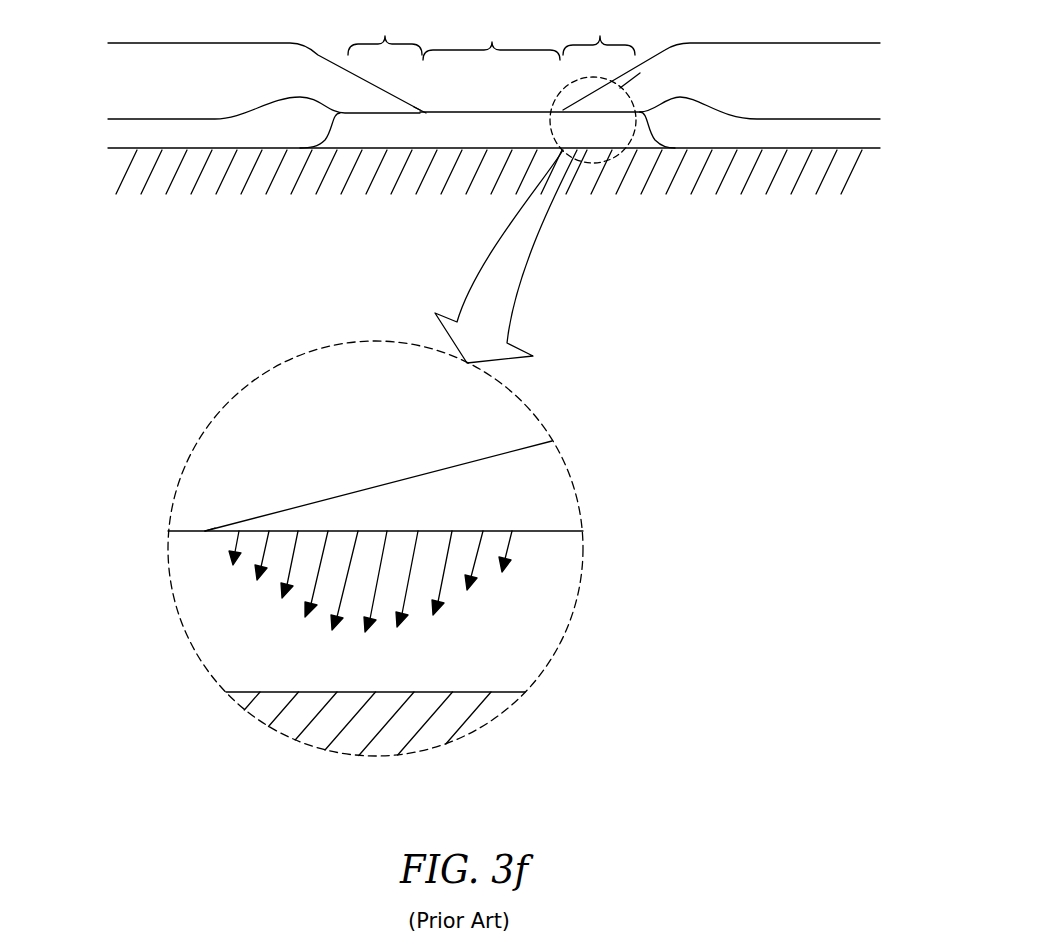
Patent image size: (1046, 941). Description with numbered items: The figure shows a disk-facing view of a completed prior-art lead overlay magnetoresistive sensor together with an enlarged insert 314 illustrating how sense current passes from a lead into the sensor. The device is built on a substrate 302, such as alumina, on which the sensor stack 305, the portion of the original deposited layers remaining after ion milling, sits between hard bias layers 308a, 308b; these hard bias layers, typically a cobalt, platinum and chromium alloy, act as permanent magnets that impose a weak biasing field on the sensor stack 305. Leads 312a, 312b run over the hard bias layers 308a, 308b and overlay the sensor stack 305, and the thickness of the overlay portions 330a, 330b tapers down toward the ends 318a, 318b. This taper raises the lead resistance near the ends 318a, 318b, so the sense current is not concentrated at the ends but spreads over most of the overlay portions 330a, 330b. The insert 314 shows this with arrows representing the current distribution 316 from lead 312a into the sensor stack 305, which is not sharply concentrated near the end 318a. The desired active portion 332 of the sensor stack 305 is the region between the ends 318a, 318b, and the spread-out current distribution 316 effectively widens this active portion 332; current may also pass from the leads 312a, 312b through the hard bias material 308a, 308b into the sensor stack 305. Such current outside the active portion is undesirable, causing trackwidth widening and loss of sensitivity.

The substrate 302 is at (870, 167).
The sensor stack 305 is at (418, 150).
The hard bias layer 308a is at (870, 133).
The hard bias layer 308b is at (120, 133).
The lead 312a is at (870, 77).
The lead 312b is at (120, 78).
The insert 314 is at (622, 88).
The current distribution 316 is at (472, 580).
The end of lead 318a is at (206, 529).
The end of lead 318b is at (424, 108).
The overlay portion 330a is at (599, 31).
The overlay portion 330b is at (385, 30).
The active portion 332 is at (491, 37).